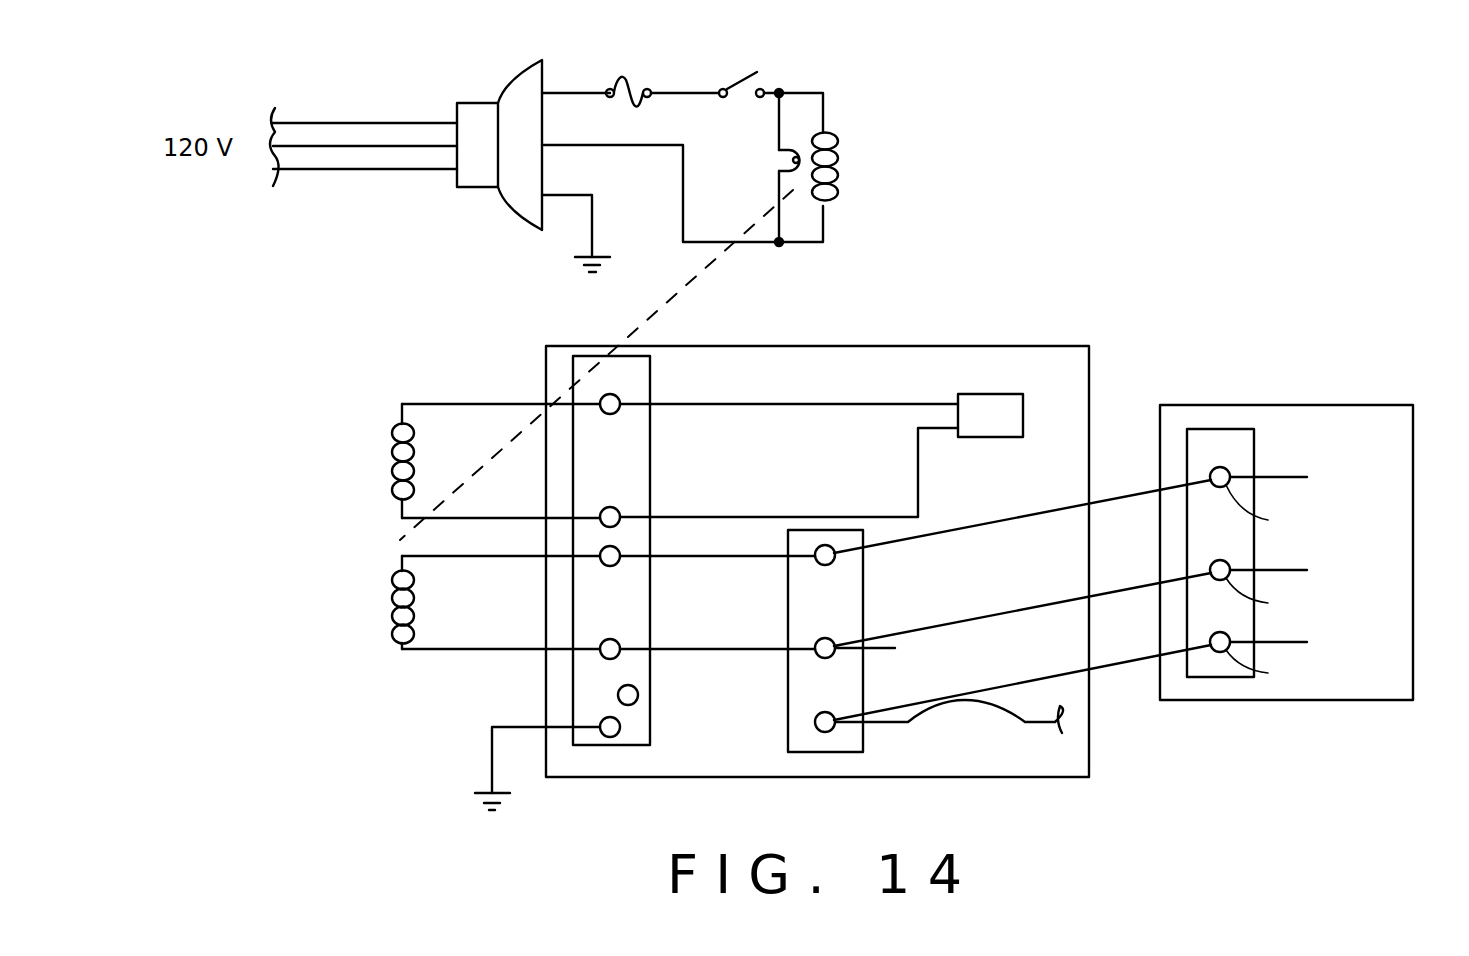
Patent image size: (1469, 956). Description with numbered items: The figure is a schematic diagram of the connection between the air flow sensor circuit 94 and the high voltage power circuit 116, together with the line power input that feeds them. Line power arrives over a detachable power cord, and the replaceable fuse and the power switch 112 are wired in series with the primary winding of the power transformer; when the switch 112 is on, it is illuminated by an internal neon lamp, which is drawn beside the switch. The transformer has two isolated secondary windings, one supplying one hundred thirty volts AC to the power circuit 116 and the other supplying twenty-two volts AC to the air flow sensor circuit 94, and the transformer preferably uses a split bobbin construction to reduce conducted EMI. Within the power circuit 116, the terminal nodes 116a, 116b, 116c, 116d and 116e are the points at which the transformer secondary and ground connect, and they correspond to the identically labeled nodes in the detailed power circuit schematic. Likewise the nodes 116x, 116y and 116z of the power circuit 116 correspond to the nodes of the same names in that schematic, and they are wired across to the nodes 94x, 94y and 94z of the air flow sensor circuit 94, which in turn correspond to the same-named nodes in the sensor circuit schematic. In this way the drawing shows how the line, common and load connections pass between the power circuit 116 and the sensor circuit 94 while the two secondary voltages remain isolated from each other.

The power switch 112 is at (813, 93).
The high voltage power circuit 116 is at (1078, 358).
The node 116a is at (618, 410).
The node 116b is at (615, 510).
The node 116c is at (616, 563).
The node 116d is at (616, 642).
The node 116e is at (620, 730).
The node 116x is at (830, 563).
The node 116y is at (830, 730).
The node 116z is at (830, 656).
The air flow sensor circuit 94 is at (1407, 418).
The node 94x is at (1228, 470).
The node 94y is at (1235, 643).
The node 94z is at (1228, 565).